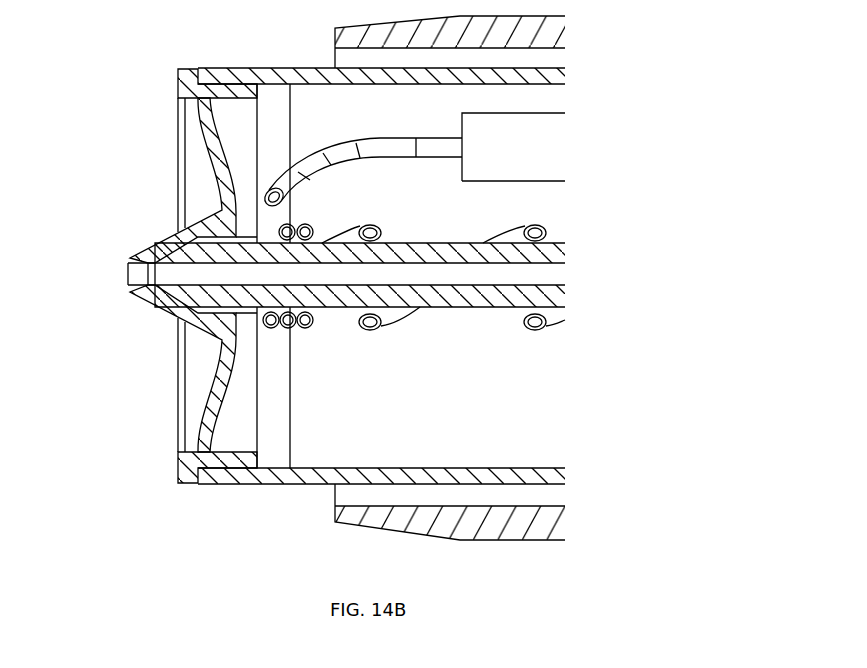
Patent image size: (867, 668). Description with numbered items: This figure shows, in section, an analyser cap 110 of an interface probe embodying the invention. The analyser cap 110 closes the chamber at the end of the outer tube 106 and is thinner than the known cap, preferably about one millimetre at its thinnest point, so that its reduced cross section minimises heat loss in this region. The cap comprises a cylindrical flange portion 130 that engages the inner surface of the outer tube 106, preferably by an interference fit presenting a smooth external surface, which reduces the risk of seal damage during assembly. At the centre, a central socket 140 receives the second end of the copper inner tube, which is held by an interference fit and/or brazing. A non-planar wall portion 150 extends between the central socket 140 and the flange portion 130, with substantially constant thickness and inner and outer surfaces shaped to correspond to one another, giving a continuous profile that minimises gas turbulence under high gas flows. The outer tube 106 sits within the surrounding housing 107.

The outer tube 106 is at (553, 82).
The housing 107 is at (553, 32).
The analyser cap 110 is at (200, 433).
The cylindrical flange portion 130 is at (232, 88).
The central socket 140 is at (150, 258).
The wall portion 150 is at (202, 128).